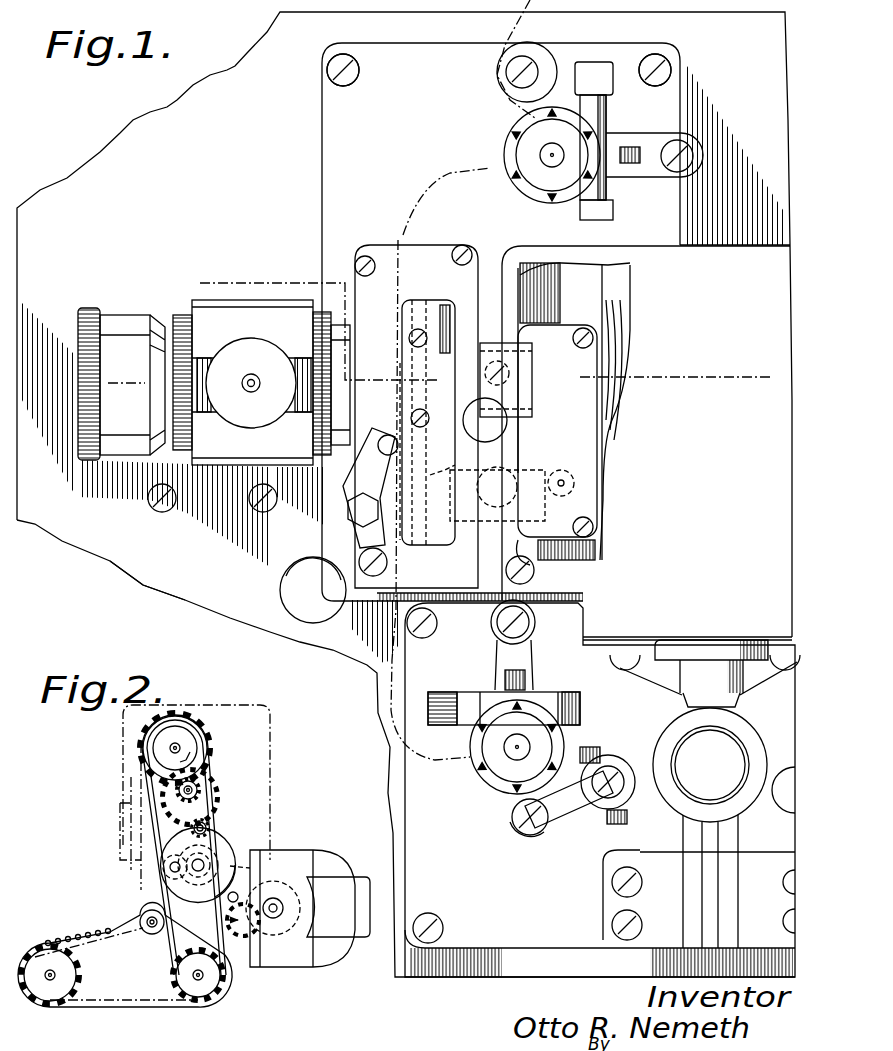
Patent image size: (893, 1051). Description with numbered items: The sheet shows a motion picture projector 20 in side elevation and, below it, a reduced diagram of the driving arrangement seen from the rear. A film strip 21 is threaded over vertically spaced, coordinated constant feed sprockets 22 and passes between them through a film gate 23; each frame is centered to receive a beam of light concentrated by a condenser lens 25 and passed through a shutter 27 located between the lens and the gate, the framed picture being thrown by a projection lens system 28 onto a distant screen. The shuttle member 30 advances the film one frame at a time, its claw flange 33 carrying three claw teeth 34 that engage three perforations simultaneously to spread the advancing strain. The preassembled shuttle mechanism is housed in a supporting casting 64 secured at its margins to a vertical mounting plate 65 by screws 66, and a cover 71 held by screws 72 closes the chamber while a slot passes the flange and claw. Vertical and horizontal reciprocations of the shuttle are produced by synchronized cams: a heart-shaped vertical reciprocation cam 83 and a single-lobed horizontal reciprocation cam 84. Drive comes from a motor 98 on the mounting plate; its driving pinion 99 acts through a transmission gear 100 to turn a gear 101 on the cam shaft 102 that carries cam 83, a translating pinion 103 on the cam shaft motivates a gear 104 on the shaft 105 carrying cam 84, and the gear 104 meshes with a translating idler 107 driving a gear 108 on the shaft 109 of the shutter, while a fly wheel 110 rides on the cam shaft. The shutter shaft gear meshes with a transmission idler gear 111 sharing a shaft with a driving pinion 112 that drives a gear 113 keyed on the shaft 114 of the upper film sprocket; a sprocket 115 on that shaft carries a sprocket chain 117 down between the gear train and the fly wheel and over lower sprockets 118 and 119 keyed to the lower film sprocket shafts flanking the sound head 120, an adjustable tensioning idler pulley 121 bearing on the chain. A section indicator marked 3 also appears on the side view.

In FIG. 1, the motion picture projector 20 is at (146, 592).
In FIG. 1, the film strip 21 is at (470, 170).
In FIG. 1, the constant feed sprockets 22 is at (528, 146).
In FIG. 1, the film gate 23 is at (338, 502).
In FIG. 1, the condenser lens 25 is at (610, 363).
In FIG. 1, the shutter 27 is at (490, 338).
In FIG. 1, the projection lens system 28 is at (181, 304).
In FIG. 1, the shuttle member 30 is at (416, 416).
In FIG. 1, the claw flange 33 is at (430, 475).
In FIG. 1, the claw teeth 34 is at (485, 420).
In FIG. 1, the supporting casting 64 is at (333, 138).
In FIG. 2, the supporting casting 64 is at (272, 722).
In FIG. 1, the mounting plate 65 is at (105, 172).
In FIG. 1, the screws 66 is at (327, 72).
In FIG. 1, the cover 71 is at (586, 462).
In FIG. 1, the screws 72 is at (583, 327).
In FIG. 1, the vertical reciprocation cam 83 is at (545, 520).
In FIG. 1, the horizontal reciprocation cam 84 is at (564, 492).
In FIG. 2, the motor 98 is at (343, 847).
In FIG. 2, the driving pinion 99 is at (284, 908).
In FIG. 2, the transmission gear 100 is at (232, 860).
In FIG. 2, the gear 101 is at (197, 902).
In FIG. 2, the cam shaft 102 is at (214, 850).
In FIG. 2, the translating pinion 103 is at (178, 886).
In FIG. 2, the gear 104 is at (165, 861).
In FIG. 2, the shaft 105 is at (167, 868).
In FIG. 2, the translating idler 107 is at (120, 812).
In FIG. 2, the gear 108 is at (207, 820).
In FIG. 2, the shaft 109 is at (207, 826).
In FIG. 2, the fly wheel 110 is at (233, 853).
In FIG. 2, the transmission idler gear 111 is at (168, 790).
In FIG. 2, the driving pinion 112 is at (201, 786).
In FIG. 2, the gear 113 is at (197, 736).
In FIG. 1, the shaft 114 is at (549, 151).
In FIG. 2, the shaft 114 is at (178, 745).
In FIG. 2, the sprocket 115 is at (192, 716).
In FIG. 2, the sprocket chain 117 is at (115, 938).
In FIG. 2, the lower sprocket 118 is at (196, 998).
In FIG. 2, the lower sprocket 119 is at (54, 996).
In FIG. 1, the sound head 120 is at (596, 685).
In FIG. 2, the tensioning idler pulley 121 is at (148, 929).
In FIG. 1, the section line 3 is at (218, 296).